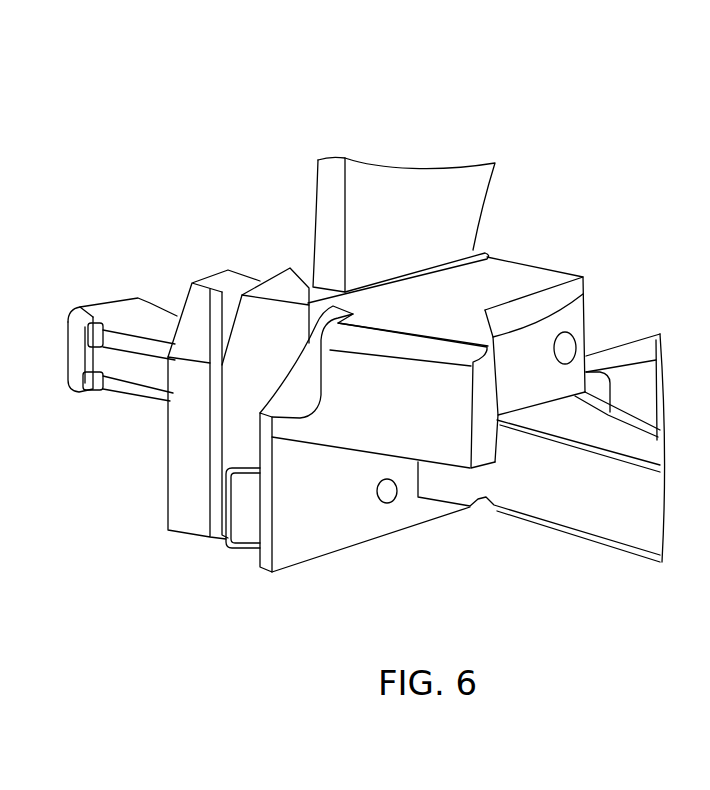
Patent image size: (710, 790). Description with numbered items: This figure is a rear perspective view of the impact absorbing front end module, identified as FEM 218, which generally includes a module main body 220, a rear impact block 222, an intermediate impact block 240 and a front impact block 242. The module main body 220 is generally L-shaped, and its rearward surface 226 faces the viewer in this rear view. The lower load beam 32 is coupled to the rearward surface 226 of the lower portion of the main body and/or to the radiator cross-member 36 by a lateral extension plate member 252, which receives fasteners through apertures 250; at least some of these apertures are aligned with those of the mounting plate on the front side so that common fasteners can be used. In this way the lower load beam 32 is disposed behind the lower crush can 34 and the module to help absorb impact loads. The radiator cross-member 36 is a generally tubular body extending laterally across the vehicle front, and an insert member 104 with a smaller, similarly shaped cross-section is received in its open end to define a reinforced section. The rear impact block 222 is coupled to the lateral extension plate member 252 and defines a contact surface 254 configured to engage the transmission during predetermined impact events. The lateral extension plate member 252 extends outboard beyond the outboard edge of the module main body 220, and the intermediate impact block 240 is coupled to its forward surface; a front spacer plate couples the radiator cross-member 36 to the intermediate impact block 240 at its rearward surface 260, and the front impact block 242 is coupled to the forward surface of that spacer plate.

The FEM 218 is at (468, 117).
The module main body 220 is at (322, 197).
The rearward surface 226 is at (468, 187).
The rear impact block 222 is at (537, 280).
The contact surface 254 is at (583, 295).
The radiator cross-member 36 is at (650, 368).
The lower load beam 32 is at (603, 532).
The apertures 250 is at (388, 504).
The lateral extension plate member 252 is at (305, 543).
The insert member 104 is at (243, 537).
The front impact block 242 is at (185, 523).
The rearward surface 260 is at (231, 300).
The intermediate impact block 240 is at (243, 453).
The lower crush can 34 is at (131, 412).